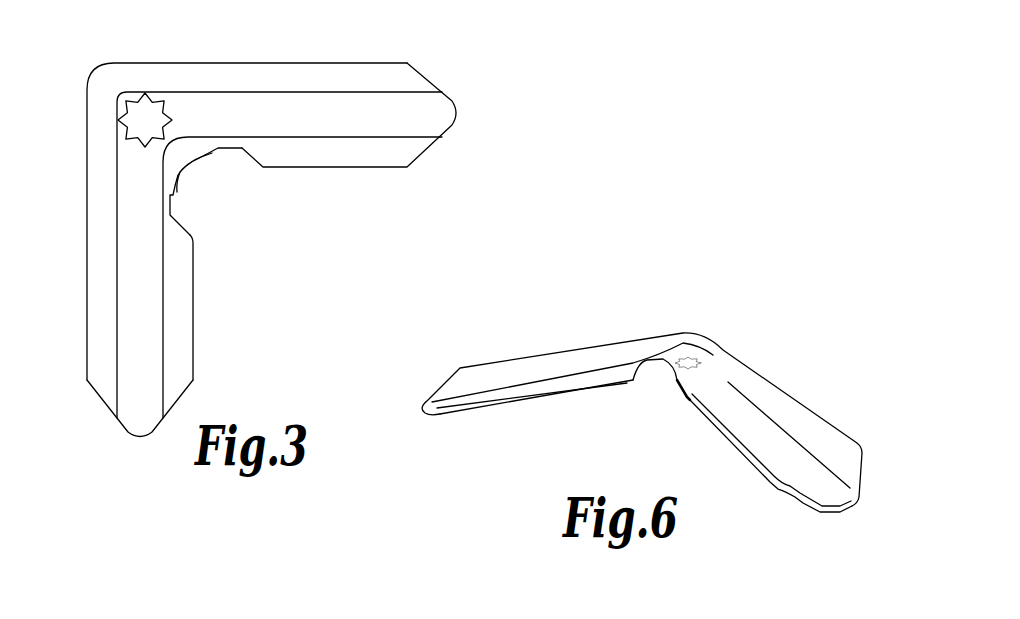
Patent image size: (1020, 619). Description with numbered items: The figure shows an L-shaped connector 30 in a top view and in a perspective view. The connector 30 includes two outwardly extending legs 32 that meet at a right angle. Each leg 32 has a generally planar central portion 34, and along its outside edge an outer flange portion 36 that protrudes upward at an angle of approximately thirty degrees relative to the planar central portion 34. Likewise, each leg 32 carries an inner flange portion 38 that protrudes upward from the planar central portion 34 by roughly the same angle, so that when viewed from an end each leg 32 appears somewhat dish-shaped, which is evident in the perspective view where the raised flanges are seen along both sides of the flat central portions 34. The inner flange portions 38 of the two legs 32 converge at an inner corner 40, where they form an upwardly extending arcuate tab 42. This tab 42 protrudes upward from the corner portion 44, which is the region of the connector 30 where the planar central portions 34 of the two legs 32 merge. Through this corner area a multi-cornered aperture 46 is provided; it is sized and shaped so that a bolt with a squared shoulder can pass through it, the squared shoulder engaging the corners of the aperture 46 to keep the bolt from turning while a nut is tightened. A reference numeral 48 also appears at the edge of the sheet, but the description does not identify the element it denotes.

In FIG. 3, the connector 30 is at (287, 226).
In FIG. 6, the connector 30 is at (645, 431).
In FIG. 3, the leg 32 is at (353, 52).
In FIG. 6, the leg 32 is at (533, 403).
In FIG. 3, the planar central portion 34 is at (384, 124).
In FIG. 6, the planar central portion 34 is at (418, 405).
In FIG. 3, the outer flange portion 36 is at (247, 66).
In FIG. 3, the inner flange portion 38 is at (182, 257).
In FIG. 6, the inner flange portion 38 is at (572, 393).
In FIG. 3, the inner corner 40 is at (199, 173).
In FIG. 6, the inner corner 40 is at (666, 389).
In FIG. 3, the arcuate tab 42 is at (197, 160).
In FIG. 6, the arcuate tab 42 is at (653, 360).
In FIG. 3, the corner portion 44 is at (136, 171).
In FIG. 3, the multi-cornered aperture 46 is at (134, 131).
In FIG. 6, the multi-cornered aperture 46 is at (703, 367).
In FIG. 3, the element 48 is at (242, 616).